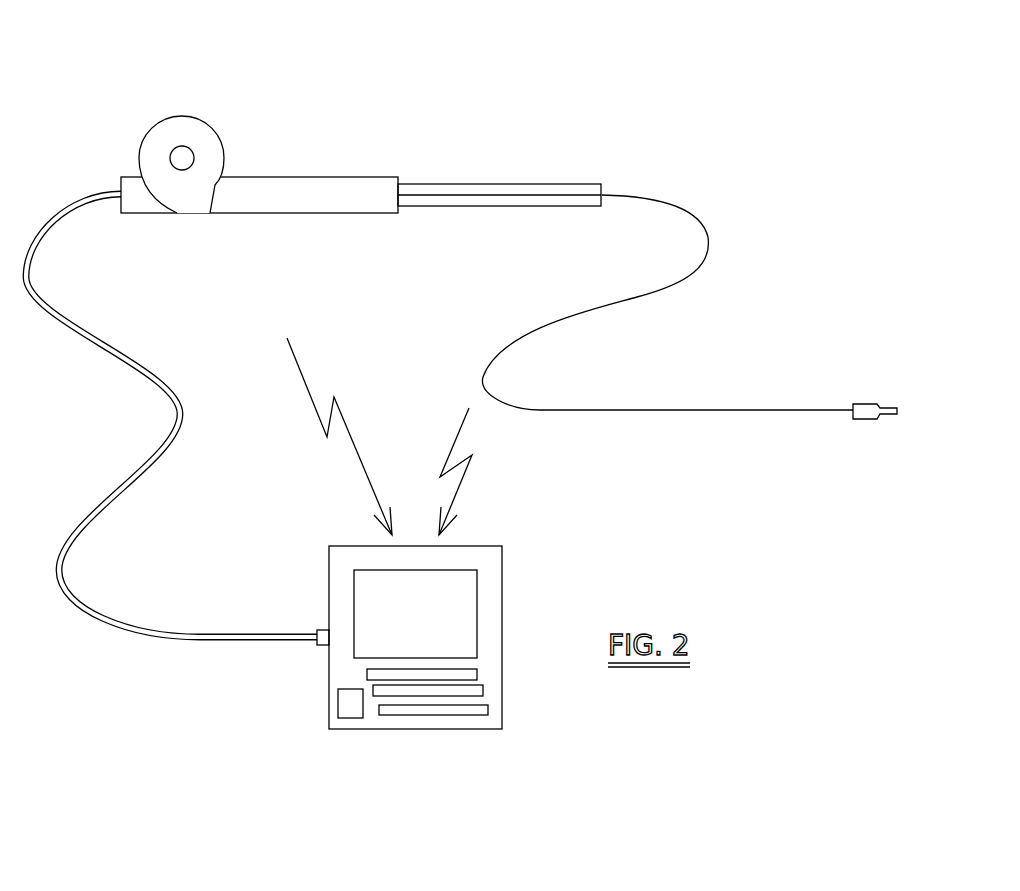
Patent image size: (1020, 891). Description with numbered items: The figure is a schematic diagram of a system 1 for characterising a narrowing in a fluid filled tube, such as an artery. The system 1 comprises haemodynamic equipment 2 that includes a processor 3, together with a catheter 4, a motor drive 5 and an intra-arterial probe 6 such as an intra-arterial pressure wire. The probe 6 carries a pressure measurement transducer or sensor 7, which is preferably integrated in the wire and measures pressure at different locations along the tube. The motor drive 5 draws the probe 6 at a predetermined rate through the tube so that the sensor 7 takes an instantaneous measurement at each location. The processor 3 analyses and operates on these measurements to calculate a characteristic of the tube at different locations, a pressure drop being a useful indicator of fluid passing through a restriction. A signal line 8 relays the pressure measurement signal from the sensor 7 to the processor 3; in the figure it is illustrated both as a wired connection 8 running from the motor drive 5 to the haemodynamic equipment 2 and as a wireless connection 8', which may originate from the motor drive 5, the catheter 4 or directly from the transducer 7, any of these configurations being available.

The system 1 is at (668, 138).
The haemodynamic equipment 2 is at (502, 603).
The processor 3 is at (350, 718).
The catheter 4 is at (498, 183).
The motor drive 5 is at (208, 127).
The intra-arterial probe 6 is at (785, 410).
The pressure measurement transducer 7 is at (863, 420).
The signal line 8 is at (177, 419).
The wireless connection 8' is at (371, 436).